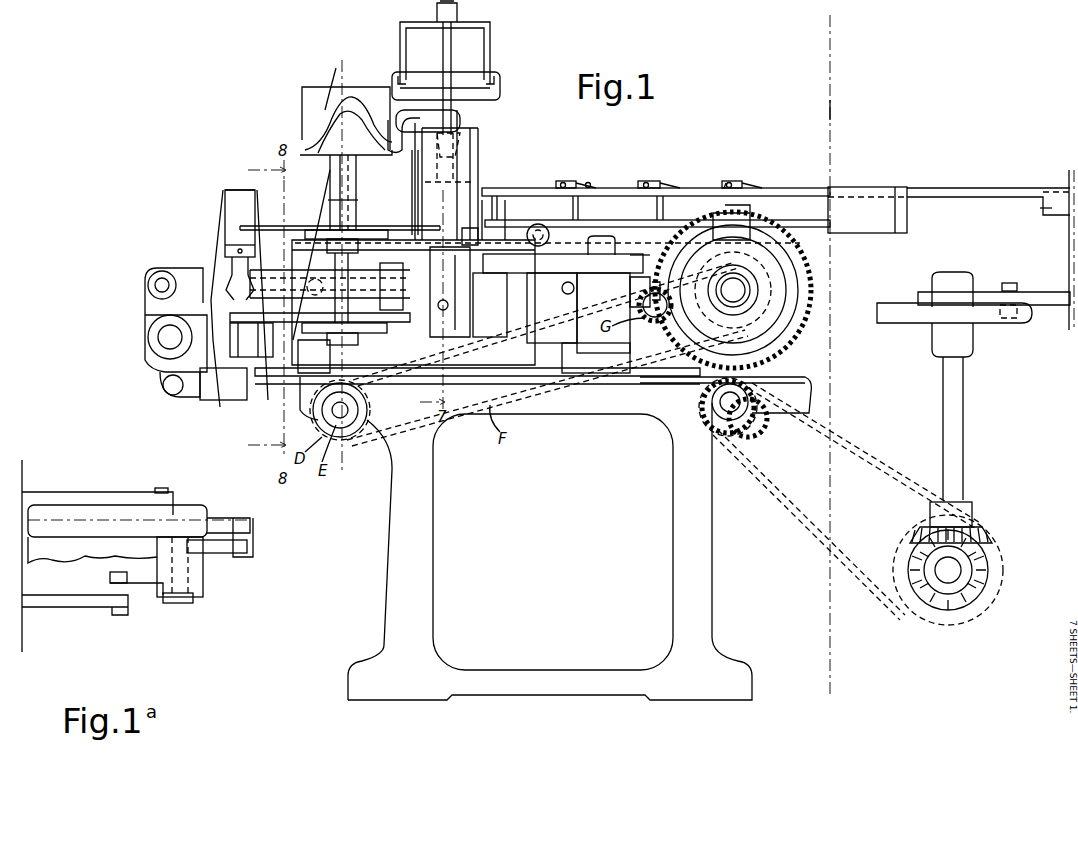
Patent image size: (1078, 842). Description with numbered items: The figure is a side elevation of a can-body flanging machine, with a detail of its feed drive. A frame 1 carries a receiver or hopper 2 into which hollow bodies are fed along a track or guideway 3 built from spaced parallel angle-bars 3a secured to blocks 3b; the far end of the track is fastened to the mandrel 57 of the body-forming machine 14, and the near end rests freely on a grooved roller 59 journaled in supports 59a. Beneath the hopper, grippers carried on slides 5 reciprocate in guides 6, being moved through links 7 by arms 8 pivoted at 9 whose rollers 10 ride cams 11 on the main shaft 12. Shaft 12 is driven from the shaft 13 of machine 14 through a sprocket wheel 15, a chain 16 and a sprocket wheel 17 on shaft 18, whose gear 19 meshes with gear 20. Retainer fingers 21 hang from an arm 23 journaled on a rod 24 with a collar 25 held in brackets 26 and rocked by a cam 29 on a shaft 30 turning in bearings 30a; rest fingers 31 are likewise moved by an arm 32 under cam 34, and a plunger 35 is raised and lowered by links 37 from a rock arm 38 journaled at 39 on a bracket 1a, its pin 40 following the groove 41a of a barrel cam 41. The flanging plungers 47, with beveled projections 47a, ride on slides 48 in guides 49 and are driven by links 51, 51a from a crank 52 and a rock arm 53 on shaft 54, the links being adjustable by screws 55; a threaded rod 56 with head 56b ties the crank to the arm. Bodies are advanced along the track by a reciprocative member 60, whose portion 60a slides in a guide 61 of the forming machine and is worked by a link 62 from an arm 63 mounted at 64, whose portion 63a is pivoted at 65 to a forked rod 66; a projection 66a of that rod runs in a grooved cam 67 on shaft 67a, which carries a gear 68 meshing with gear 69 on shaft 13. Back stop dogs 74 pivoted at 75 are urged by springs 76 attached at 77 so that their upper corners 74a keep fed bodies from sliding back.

In FIG. 1, the frame 1 is at (428, 510).
In FIG. 1, the receiver or hopper 2 is at (472, 146).
In FIG. 1, the track or guideway 3 is at (684, 194).
In FIG. 1, the angle-bars 3a is at (770, 196).
In FIG. 1, the blocks 3b is at (825, 196).
In FIG. 1, the slides 5 is at (449, 292).
In FIG. 1, the guides 6 is at (480, 280).
In FIG. 1, the links 7 is at (486, 194).
In FIG. 1, the arms 8 is at (560, 262).
In FIG. 1, the pivot 9 is at (608, 243).
In FIG. 1, the projections or rollers 10 is at (780, 262).
In FIG. 1, the cams 11 is at (772, 316).
In FIG. 1, the shaft 12 is at (742, 292).
In FIG. 1, the shaft 13 is at (948, 584).
In FIG. 1, the can-body forming machine 14 is at (832, 108).
In FIG. 1, the sprocket wheel 15 is at (958, 625).
In FIG. 1, the chain 16 is at (835, 552).
In FIG. 1, the sprocket wheel 17 is at (745, 430).
In FIG. 1, the shaft 18 is at (725, 410).
In FIG. 1, the gear 19 is at (755, 418).
In FIG. 1, the gear 20 is at (808, 312).
In FIG. 1, the retainer fingers 21 is at (460, 236).
In FIG. 1, the arm 23 is at (405, 232).
In FIG. 1, the rod or shaft 24 is at (240, 265).
In FIG. 1, the collar 25 is at (228, 240).
In FIG. 1, the brackets 26 is at (218, 185).
In FIG. 1, the cam 29 is at (327, 232).
In FIG. 1, the shaft 30 is at (345, 205).
In FIG. 1, the bearings 30a is at (378, 398).
In FIG. 1, the rest fingers 31 is at (475, 378).
In FIG. 1, the arm 32 is at (260, 340).
In FIG. 1, the cam 34 is at (300, 385).
In FIG. 1, the plunger 35 is at (470, 180).
In FIG. 1, the links 37 is at (403, 44).
In FIG. 1, the rock arm 38 is at (500, 98).
In FIG. 1, the journal 39 is at (465, 119).
In FIG. 1, the pin or roller 40 is at (392, 110).
In FIG. 1, the barrel cam 41 is at (303, 102).
In FIG. 1, the groove 41a is at (326, 82).
In FIG. 1, the plungers or abutments 47 is at (548, 325).
In FIG. 1, the projections 47a is at (385, 268).
In FIG. 1, the slides 48 is at (345, 272).
In FIG. 1, the ways or guides 49 is at (330, 284).
In FIG. 1, the link 51 is at (655, 316).
In FIG. 1, the link 51a is at (200, 272).
In FIG. 1, the crank 52 is at (750, 285).
In FIG. 1, the rock arm 53 is at (148, 320).
In FIG. 1, the shaft 54 is at (168, 336).
In FIG. 1, the screws 55 is at (240, 272).
In FIG. 1, the link or rod 56 is at (258, 396).
In FIG. 1, the head 56b is at (184, 400).
In FIG. 1, the mandrel 57 is at (867, 210).
In FIG. 1, the roller 59 is at (548, 218).
In FIG. 1, the supports 59a is at (558, 375).
In FIG. 1, the reciprocative member 60 is at (973, 190).
In FIG. 1, the portion of member 60a is at (1043, 210).
In FIG. 1A, the guide 61 is at (108, 512).
In FIG. 1A, the link 62 is at (216, 520).
In FIG. 1A, the arm 63 is at (222, 550).
In FIG. 1A, the portion of arm 63a is at (165, 595).
In FIG. 1A, the support 64 is at (182, 604).
In FIG. 1A, the pivot 65 is at (110, 578).
In FIG. 1, the forked rod 66 is at (1052, 305).
In FIG. 1A, the forked rod 66 is at (54, 602).
In FIG. 1, the projection 66a is at (1008, 282).
In FIG. 1, the grooved cam 67 is at (975, 318).
In FIG. 1, the shaft 67a is at (962, 416).
In FIG. 1, the gear 68 is at (978, 510).
In FIG. 1, the gear 69 is at (985, 548).
In FIG. 1, the back stop dogs 74 is at (558, 186).
In FIG. 1, the upper corners 74a is at (722, 188).
In FIG. 1, the pivot 75 is at (648, 186).
In FIG. 1, the springs 76 is at (594, 192).
In FIG. 1, the attachment point 77 is at (764, 180).
In FIG. 1, the bracket 1a is at (418, 185).